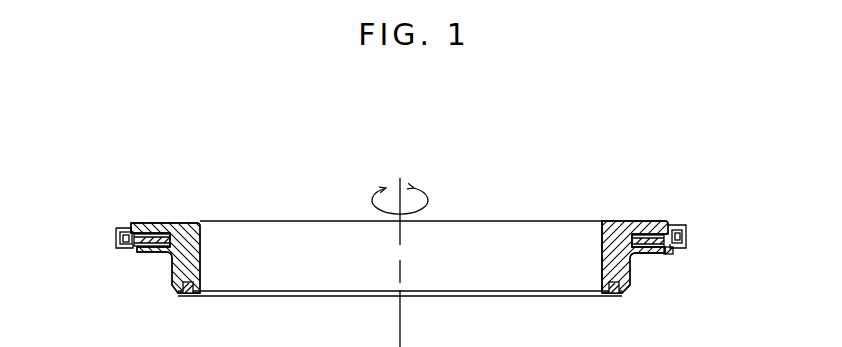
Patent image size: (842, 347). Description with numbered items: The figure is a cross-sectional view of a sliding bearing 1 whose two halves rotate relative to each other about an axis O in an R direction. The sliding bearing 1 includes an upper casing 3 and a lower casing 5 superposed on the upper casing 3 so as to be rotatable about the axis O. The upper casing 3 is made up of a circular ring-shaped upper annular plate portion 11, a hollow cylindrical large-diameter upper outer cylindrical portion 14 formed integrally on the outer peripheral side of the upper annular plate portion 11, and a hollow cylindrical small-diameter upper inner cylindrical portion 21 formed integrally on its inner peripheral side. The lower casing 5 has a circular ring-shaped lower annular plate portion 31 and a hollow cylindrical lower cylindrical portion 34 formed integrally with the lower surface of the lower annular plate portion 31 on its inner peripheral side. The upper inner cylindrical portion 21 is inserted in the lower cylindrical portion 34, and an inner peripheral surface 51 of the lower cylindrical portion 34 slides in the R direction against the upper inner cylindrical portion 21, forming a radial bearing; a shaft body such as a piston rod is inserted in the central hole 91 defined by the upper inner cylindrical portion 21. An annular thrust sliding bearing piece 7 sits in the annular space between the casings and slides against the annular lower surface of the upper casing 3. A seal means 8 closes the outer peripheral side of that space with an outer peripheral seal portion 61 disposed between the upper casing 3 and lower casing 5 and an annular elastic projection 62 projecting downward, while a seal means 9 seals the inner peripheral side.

The sliding bearing 1 is at (110, 182).
The upper casing 3 is at (223, 220).
The lower casing 5 is at (224, 297).
The annular thrust sliding bearing piece 7 is at (158, 235).
The seal means 8 is at (127, 256).
The seal means 9 is at (188, 296).
The upper annular plate portion 11 is at (632, 220).
The upper outer cylindrical portion 14 is at (687, 231).
The upper inner cylindrical portion 21 is at (608, 244).
The lower annular plate portion 31 is at (643, 254).
The lower cylindrical portion 34 is at (627, 283).
The inner peripheral surface 51 is at (606, 266).
The outer peripheral seal portion 61 is at (666, 249).
The annular elastic projection 62 is at (672, 256).
The central hole 91 is at (340, 262).
The axis O is at (402, 263).
The R direction R is at (428, 190).